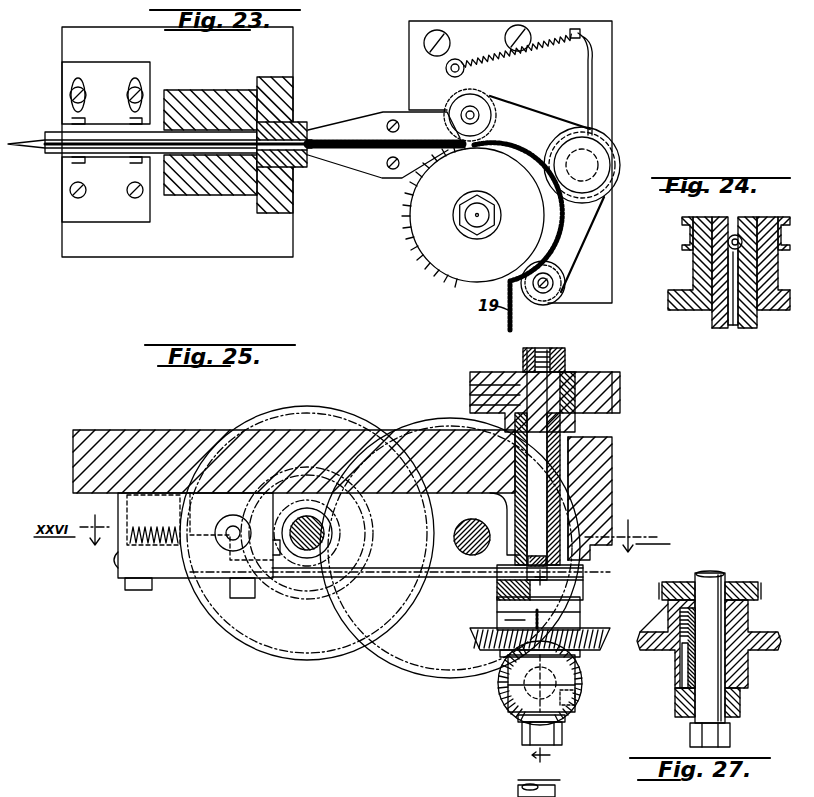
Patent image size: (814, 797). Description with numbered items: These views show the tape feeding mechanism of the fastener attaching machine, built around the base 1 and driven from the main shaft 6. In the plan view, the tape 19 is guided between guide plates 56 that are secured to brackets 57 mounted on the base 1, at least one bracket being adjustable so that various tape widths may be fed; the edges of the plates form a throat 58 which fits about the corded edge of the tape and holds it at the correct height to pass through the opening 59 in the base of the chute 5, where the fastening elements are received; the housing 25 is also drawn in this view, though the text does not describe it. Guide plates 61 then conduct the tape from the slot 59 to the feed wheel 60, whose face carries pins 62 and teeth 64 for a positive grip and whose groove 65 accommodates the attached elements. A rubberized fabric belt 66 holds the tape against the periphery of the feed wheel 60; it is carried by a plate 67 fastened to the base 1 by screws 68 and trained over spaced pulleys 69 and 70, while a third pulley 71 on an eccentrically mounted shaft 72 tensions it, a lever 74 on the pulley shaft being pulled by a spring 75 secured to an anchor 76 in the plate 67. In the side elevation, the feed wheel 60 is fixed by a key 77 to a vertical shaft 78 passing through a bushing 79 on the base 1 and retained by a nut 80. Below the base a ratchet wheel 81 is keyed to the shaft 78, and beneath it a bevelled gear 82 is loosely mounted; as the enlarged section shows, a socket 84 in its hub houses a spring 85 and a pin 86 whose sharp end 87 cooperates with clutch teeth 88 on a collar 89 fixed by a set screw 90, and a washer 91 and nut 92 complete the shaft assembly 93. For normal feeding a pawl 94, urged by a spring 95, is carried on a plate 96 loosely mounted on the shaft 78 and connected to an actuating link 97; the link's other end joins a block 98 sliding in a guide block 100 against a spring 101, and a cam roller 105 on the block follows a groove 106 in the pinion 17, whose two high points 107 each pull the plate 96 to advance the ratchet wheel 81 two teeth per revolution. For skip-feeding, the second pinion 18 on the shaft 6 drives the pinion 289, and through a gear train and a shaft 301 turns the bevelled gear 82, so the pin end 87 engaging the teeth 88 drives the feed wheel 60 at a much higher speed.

In FIG. 25, the base 1 is at (612, 481).
In FIG. 23, the chute 5 is at (266, 90).
In FIG. 25, the shaft 6 is at (335, 522).
In FIG. 25, the pinion 17 is at (348, 652).
In FIG. 25, the second pinion 18 is at (345, 552).
In FIG. 23, the tape 19 is at (28, 140).
In FIG. 24, the tape 19 is at (722, 318).
In FIG. 23, the housing 25 is at (177, 142).
In FIG. 23, the guide plates 56 is at (52, 132).
In FIG. 24, the guide plates 56 is at (743, 330).
In FIG. 23, the brackets 57 is at (112, 50).
In FIG. 24, the brackets 57 is at (696, 268).
In FIG. 24, the throat 58 is at (738, 235).
In FIG. 23, the opening 59 is at (268, 214).
In FIG. 23, the feed wheel 60 is at (440, 262).
In FIG. 25, the feed wheel 60 is at (610, 372).
In FIG. 23, the guide plates 61 is at (392, 118).
In FIG. 23, the pins 62 is at (412, 248).
In FIG. 25, the pins 62 is at (470, 392).
In FIG. 25, the teeth 64 is at (470, 405).
In FIG. 25, the groove 65 is at (470, 380).
In FIG. 23, the belt 66 is at (553, 122).
In FIG. 23, the plate 67 is at (612, 49).
In FIG. 23, the screws 68 is at (440, 30).
In FIG. 23, the pulley 69 is at (566, 292).
In FIG. 23, the pulley 70 is at (478, 100).
In FIG. 23, the third pulley 71 is at (617, 178).
In FIG. 23, the eccentrically mounted shaft 72 is at (598, 160).
In FIG. 23, the lever 74 is at (592, 108).
In FIG. 23, the spring 75 is at (558, 34).
In FIG. 23, the anchor 76 is at (461, 62).
In FIG. 25, the key 77 is at (578, 372).
In FIG. 25, the shaft 78 is at (523, 384).
In FIG. 27, the shaft 78 is at (708, 576).
In FIG. 25, the bushing 79 is at (600, 457).
In FIG. 25, the nut 80 is at (553, 348).
In FIG. 25, the ratchet wheel 81 is at (497, 590).
In FIG. 27, the ratchet wheel 81 is at (752, 580).
In FIG. 27, the bevelled gear 82 is at (755, 633).
In FIG. 27, the socket 84 is at (680, 616).
In FIG. 27, the spring 85 is at (682, 606).
In FIG. 27, the pin 86 is at (683, 688).
In FIG. 27, the sharp end 87 is at (676, 704).
In FIG. 25, the clutch teeth 88 is at (508, 700).
In FIG. 27, the clutch teeth 88 is at (742, 690).
In FIG. 25, the collar 89 is at (572, 704).
In FIG. 27, the collar 89 is at (742, 714).
In FIG. 25, the set screw 90 is at (585, 697).
In FIG. 25, the washer 91 is at (522, 724).
In FIG. 25, the nut 92 is at (520, 746).
In FIG. 25, the shaft assembly 93 is at (582, 626).
In FIG. 25, the pawl 94 is at (540, 590).
In FIG. 25, the spring 95 is at (512, 621).
In FIG. 25, the plate 96 is at (598, 582).
In FIG. 25, the actuating link 97 is at (400, 564).
In FIG. 25, the block 98 is at (233, 545).
In FIG. 25, the guide block 100 is at (118, 580).
In FIG. 25, the spring 101 is at (200, 526).
In FIG. 25, the cam roller 105 is at (248, 600).
In FIG. 25, the groove 106 is at (272, 640).
In FIG. 25, the high points 107 is at (300, 585).
In FIG. 25, the pinion 289 is at (408, 658).
In FIG. 25, the shaft 301 is at (556, 790).